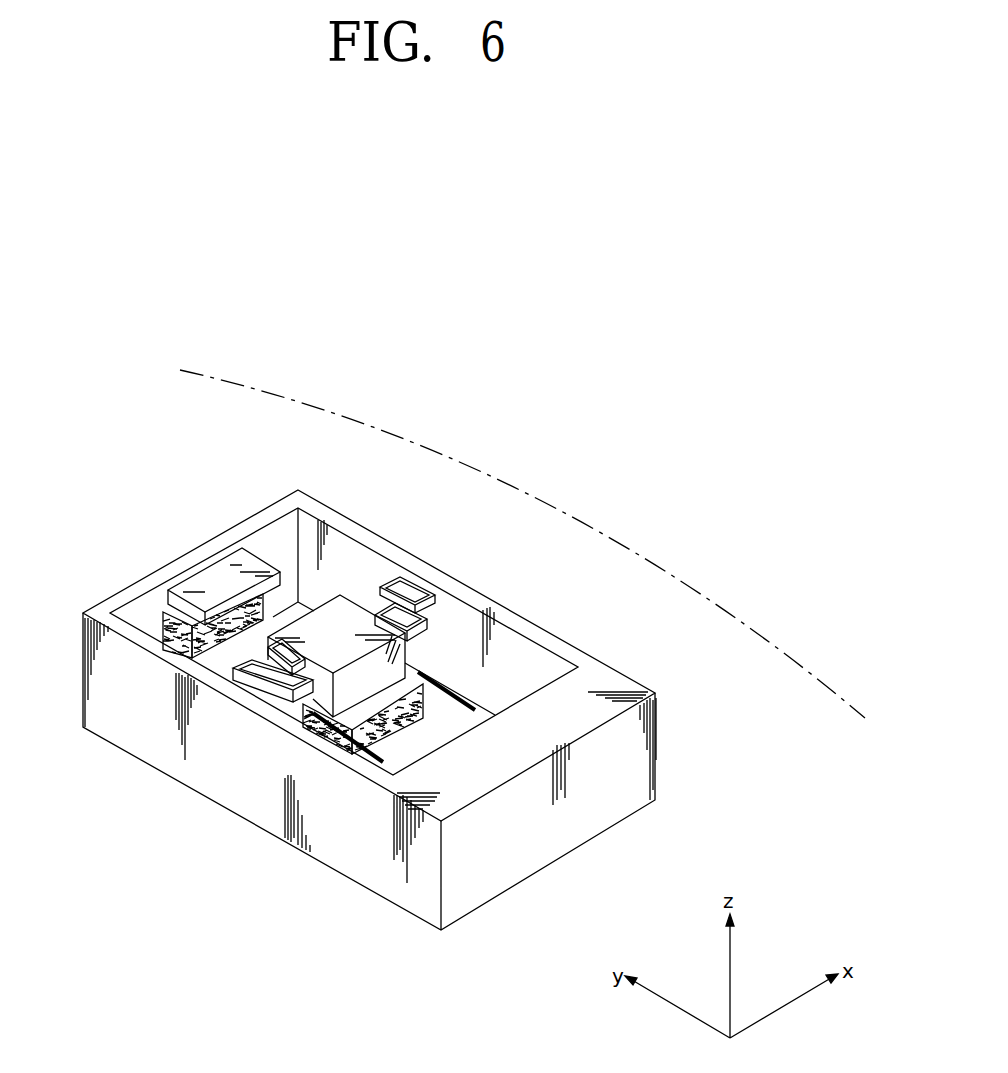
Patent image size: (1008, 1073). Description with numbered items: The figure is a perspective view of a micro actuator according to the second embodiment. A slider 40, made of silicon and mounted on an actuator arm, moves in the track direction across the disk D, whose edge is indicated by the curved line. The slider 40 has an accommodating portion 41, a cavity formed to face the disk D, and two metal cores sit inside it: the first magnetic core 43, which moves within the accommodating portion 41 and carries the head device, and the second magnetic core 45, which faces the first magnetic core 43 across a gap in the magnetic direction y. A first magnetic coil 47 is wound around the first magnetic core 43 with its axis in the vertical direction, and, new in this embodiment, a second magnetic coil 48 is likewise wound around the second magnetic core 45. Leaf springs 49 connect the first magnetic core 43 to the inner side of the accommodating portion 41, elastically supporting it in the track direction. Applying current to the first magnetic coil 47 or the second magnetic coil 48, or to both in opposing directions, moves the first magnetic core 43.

The slider 40 is at (658, 800).
The accommodating portion 41 is at (542, 668).
The first magnetic core 43 is at (335, 617).
The second magnetic core 45 is at (225, 570).
The first magnetic coil 47 is at (293, 727).
The second magnetic coil 48 is at (163, 622).
The leaf springs 49 is at (407, 580).
The disk D is at (658, 568).